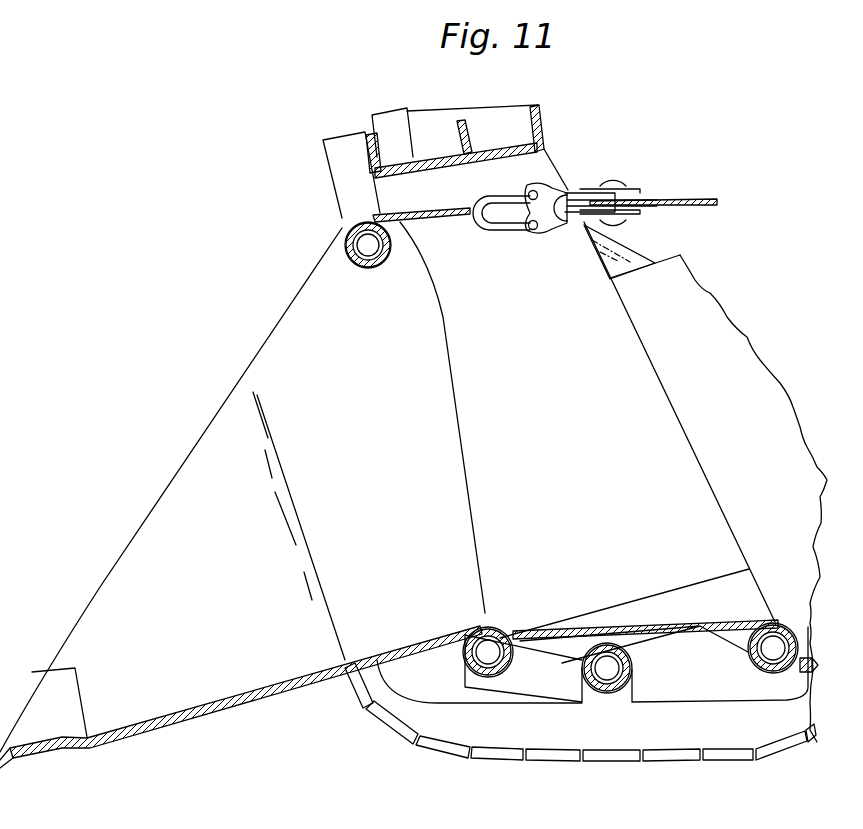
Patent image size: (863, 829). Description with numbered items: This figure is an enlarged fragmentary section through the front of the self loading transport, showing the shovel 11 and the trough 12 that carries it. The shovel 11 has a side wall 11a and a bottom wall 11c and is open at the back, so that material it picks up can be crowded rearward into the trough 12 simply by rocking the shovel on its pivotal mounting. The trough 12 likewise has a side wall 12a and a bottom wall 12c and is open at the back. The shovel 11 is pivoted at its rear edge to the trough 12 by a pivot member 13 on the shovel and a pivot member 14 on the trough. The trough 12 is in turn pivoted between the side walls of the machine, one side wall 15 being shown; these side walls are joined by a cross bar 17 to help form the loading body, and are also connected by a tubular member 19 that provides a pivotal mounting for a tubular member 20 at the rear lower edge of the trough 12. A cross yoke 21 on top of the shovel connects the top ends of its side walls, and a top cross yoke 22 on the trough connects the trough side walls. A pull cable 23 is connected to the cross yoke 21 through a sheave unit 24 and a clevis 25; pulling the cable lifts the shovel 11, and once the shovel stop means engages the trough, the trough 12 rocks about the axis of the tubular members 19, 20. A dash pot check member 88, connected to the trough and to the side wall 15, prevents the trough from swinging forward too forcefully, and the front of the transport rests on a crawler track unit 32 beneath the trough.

The shovel 11 is at (207, 484).
The side wall 11a is at (355, 497).
The bottom wall 11c is at (248, 698).
The trough 12 is at (628, 345).
The side wall 12a is at (614, 492).
The bottom wall 12c is at (727, 617).
The pivot member 13 is at (497, 627).
The pivot member 14 is at (472, 658).
The side wall 15 is at (798, 417).
The cross bar 17 is at (807, 665).
The tubular member 19 is at (807, 617).
The tubular member 20 is at (810, 643).
The cross yoke 21 is at (433, 222).
The top cross yoke 22 is at (500, 128).
The pull cable 23 is at (717, 198).
The sheave unit 24 is at (592, 195).
The clevis 25 is at (507, 225).
The crawler track unit 32 is at (677, 757).
The dash pot check member 88 is at (633, 260).